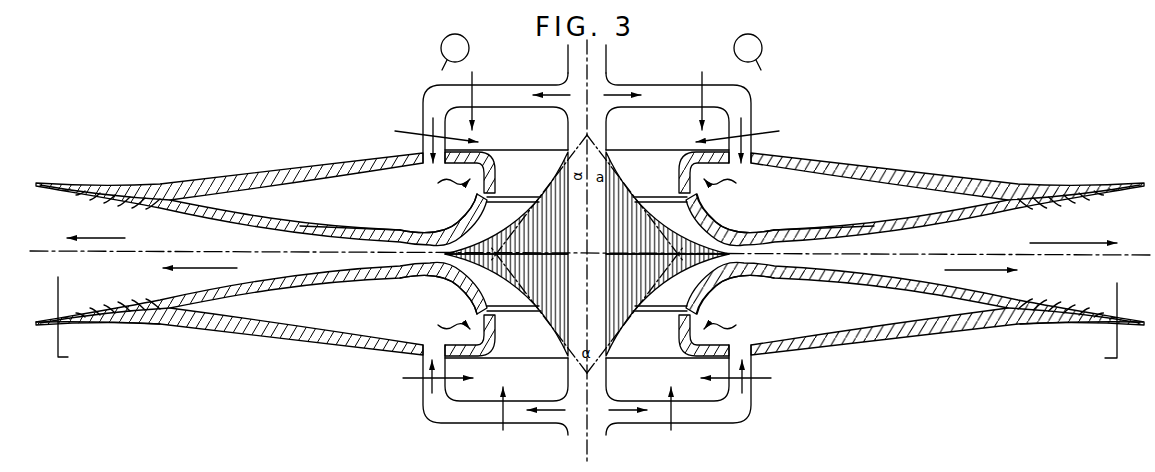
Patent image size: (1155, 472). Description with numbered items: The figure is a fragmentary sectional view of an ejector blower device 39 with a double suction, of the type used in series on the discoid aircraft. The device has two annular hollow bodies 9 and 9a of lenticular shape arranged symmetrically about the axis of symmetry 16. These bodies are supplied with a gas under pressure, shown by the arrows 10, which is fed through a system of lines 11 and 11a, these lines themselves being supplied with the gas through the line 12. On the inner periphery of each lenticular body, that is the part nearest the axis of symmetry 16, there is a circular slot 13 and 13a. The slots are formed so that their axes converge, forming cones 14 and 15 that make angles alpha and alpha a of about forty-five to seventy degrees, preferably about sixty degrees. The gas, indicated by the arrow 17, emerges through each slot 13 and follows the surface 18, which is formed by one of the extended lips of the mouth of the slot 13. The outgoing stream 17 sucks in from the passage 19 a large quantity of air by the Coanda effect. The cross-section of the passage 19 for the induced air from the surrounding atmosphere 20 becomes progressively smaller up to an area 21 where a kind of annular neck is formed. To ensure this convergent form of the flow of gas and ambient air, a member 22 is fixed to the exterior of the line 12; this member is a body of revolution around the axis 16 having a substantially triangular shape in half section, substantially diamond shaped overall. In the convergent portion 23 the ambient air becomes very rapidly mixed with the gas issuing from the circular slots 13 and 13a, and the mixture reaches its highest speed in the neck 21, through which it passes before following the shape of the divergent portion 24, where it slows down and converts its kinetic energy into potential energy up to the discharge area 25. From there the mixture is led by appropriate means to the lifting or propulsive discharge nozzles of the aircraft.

The annular hollow body 9 is at (300, 202).
The annular hollow body 9a is at (300, 312).
The gas under pressure arrows 10 is at (432, 118).
The line 11 is at (495, 93).
The line 11a is at (487, 408).
The line 12 is at (600, 62).
The circular slot 13 is at (488, 196).
The circular slot 13a is at (487, 320).
The cone 14 is at (490, 218).
The cone 15 is at (480, 287).
The axis of symmetry 16 is at (587, 61).
The gas stream 17 is at (455, 228).
The surface 18 is at (432, 285).
The passage 19 is at (527, 140).
The surrounding atmosphere 20 is at (601, 52).
The annular neck 21 is at (410, 258).
The member 22 is at (543, 265).
The convergent portion 23 is at (423, 230).
The divergent portion 24 is at (160, 292).
The discharge area 25 is at (587, 323).
The ejector blower device 39 is at (163, 155).